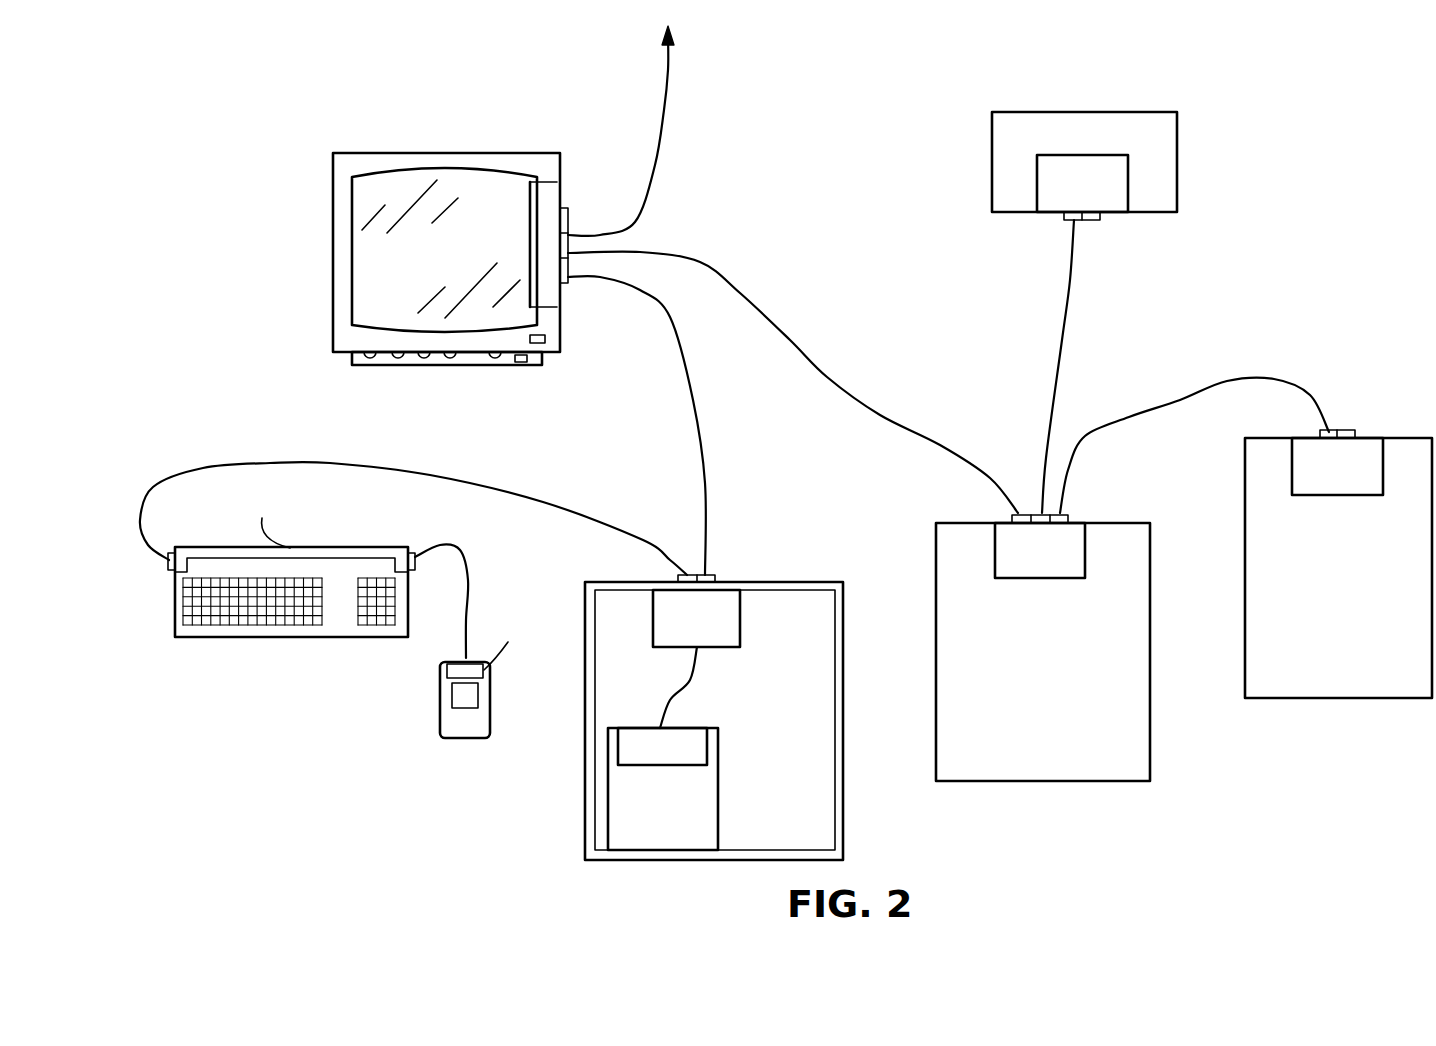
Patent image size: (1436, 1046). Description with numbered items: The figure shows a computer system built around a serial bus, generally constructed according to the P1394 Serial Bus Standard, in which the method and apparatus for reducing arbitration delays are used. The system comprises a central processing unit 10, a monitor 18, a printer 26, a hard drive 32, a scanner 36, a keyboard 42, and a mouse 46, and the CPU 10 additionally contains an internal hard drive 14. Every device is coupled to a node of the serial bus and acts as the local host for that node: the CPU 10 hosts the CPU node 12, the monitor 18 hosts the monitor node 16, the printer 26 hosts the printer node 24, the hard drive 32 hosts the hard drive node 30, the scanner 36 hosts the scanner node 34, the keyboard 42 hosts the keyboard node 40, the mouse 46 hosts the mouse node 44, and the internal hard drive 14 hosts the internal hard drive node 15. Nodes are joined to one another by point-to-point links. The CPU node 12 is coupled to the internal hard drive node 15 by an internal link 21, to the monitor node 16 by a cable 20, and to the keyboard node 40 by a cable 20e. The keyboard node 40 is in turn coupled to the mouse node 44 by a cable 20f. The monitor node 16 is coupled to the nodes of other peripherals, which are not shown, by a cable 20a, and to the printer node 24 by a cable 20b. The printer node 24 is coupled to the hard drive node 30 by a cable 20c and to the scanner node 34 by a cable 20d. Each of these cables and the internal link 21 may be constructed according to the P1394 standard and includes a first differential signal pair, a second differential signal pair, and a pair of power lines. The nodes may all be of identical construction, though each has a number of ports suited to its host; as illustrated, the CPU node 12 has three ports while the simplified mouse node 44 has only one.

The central processing unit (CPU) 10 is at (845, 830).
The CPU node 12 is at (736, 600).
The internal hard drive 14 is at (718, 808).
The internal hard drive node 15 is at (705, 740).
The monitor node 16 is at (555, 188).
The monitor 18 is at (333, 225).
The cable 20 is at (705, 438).
The cable 20a is at (658, 154).
The cable 20b is at (735, 290).
The cable 20c is at (1062, 314).
The cable 20d is at (1183, 400).
The cable 20e is at (510, 468).
The cable 20f is at (497, 556).
The internal link 21 is at (686, 686).
The printer node 24 is at (1002, 530).
The printer 26 is at (1035, 783).
The hard drive node 30 is at (1110, 220).
The hard drive 32 is at (1117, 112).
The scanner node 34 is at (1303, 448).
The scanner 36 is at (1335, 700).
The keyboard node 40 is at (328, 549).
The keyboard 42 is at (205, 638).
The mouse node 44 is at (492, 680).
The mouse 46 is at (492, 731).